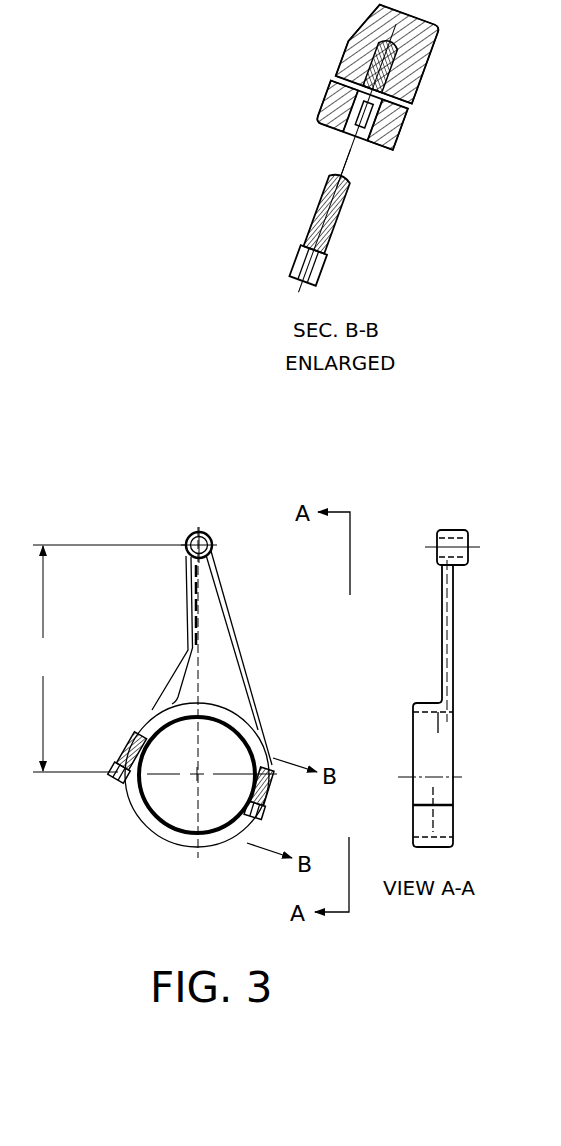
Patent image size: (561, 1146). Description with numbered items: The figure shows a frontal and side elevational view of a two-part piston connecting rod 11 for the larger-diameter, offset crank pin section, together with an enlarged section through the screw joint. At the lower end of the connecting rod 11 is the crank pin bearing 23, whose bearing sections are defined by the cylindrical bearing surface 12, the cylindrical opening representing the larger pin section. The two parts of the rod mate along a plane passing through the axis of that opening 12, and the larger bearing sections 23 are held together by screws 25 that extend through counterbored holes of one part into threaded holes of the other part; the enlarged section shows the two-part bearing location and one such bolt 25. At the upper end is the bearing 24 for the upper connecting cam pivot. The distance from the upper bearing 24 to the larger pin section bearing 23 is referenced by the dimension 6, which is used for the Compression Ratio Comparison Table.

The distance 6 is at (109, 658).
The connecting rod 11 is at (240, 613).
The cylindrical bearing surface 12 is at (170, 738).
The crank pin bearing 23 is at (143, 815).
The bearing 24 is at (188, 536).
The screw 25 is at (348, 213).